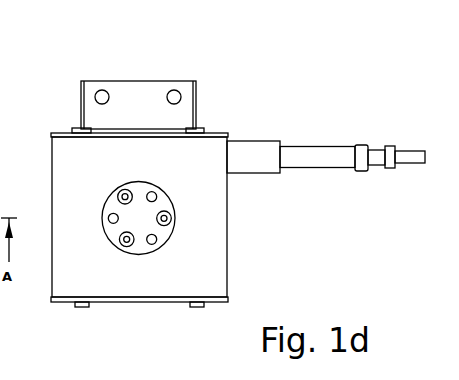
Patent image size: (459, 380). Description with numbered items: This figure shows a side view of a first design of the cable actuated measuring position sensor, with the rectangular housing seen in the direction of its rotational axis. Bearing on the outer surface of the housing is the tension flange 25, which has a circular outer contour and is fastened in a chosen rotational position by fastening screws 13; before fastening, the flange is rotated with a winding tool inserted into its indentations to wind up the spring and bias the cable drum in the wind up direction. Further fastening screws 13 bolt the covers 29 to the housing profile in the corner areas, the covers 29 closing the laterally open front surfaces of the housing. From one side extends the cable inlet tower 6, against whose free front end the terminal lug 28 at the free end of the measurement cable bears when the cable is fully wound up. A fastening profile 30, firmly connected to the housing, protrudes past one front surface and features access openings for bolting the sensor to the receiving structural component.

The cable inlet tower 6 is at (263, 139).
The fastening screws 13 is at (87, 308).
The tension flange 25 is at (163, 235).
The terminal lug 28 is at (423, 149).
The covers 29 is at (59, 130).
The fastening profile 30 is at (85, 79).